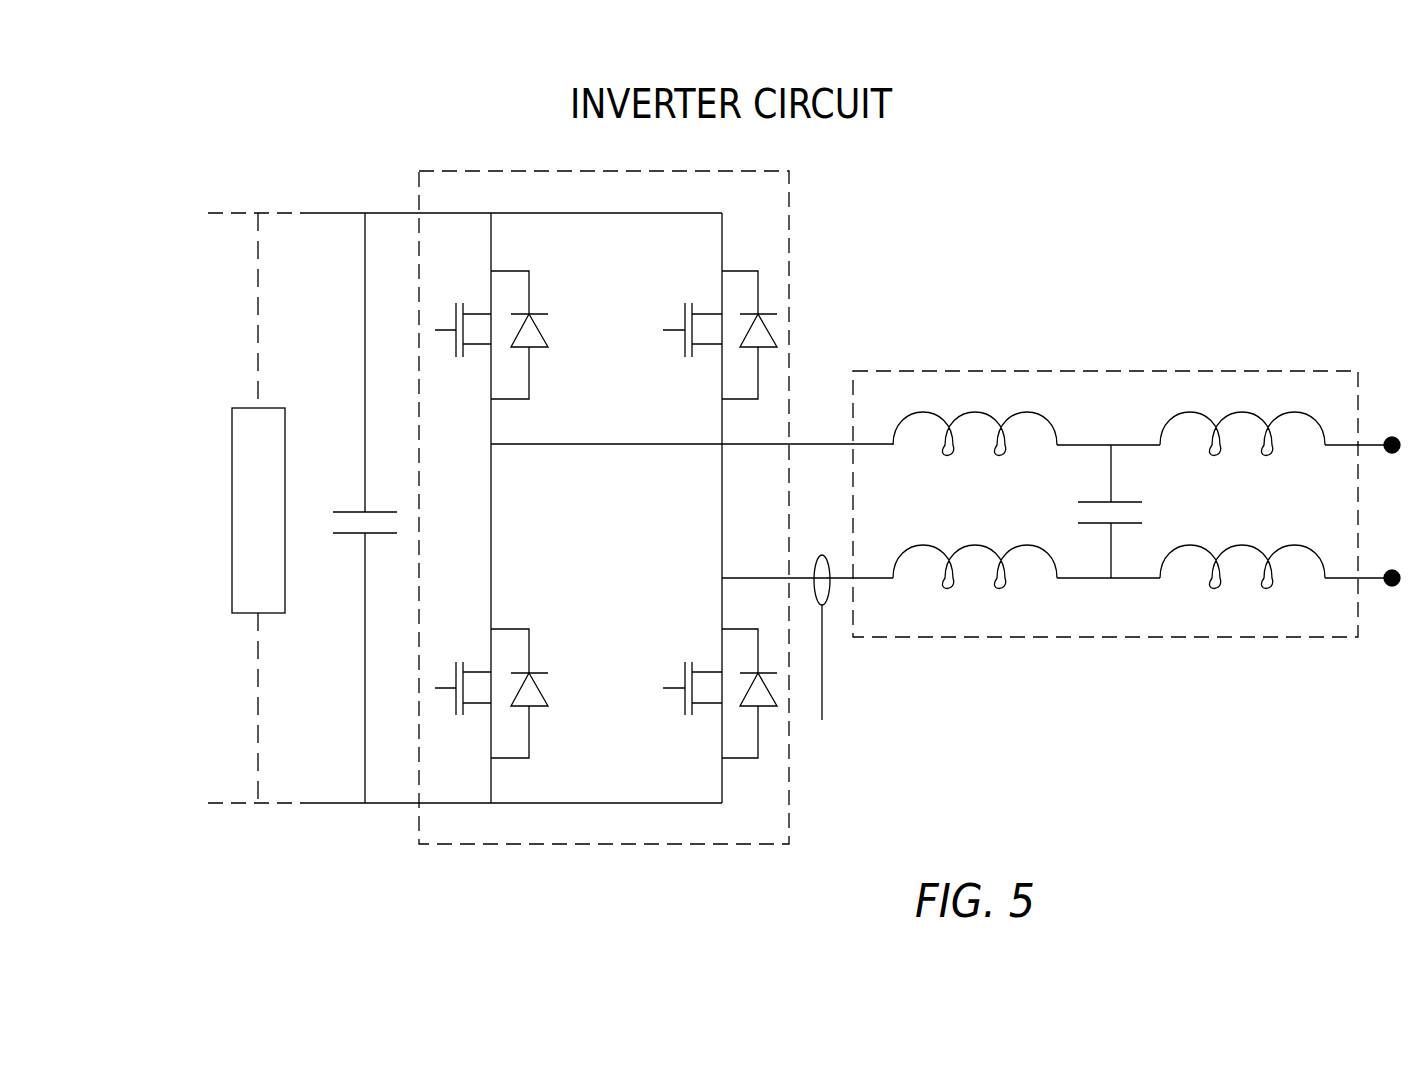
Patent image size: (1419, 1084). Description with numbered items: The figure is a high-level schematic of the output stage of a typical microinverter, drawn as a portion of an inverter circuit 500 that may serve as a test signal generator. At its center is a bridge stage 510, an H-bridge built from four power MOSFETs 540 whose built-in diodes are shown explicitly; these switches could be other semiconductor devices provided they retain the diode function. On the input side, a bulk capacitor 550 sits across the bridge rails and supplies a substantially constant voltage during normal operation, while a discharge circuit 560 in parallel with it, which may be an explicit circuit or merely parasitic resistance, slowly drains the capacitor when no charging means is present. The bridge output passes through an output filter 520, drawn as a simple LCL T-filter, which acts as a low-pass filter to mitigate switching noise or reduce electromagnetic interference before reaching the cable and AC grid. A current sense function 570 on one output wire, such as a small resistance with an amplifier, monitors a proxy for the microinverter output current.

The inverter circuit 500 is at (765, 509).
The bridge stage 510 is at (653, 524).
The output filter 520 is at (1232, 371).
The power MOSFETs 540 is at (684, 650).
The bulk capacitor 550 is at (348, 496).
The discharge circuit 560 is at (232, 542).
The current sense function 570 is at (837, 676).